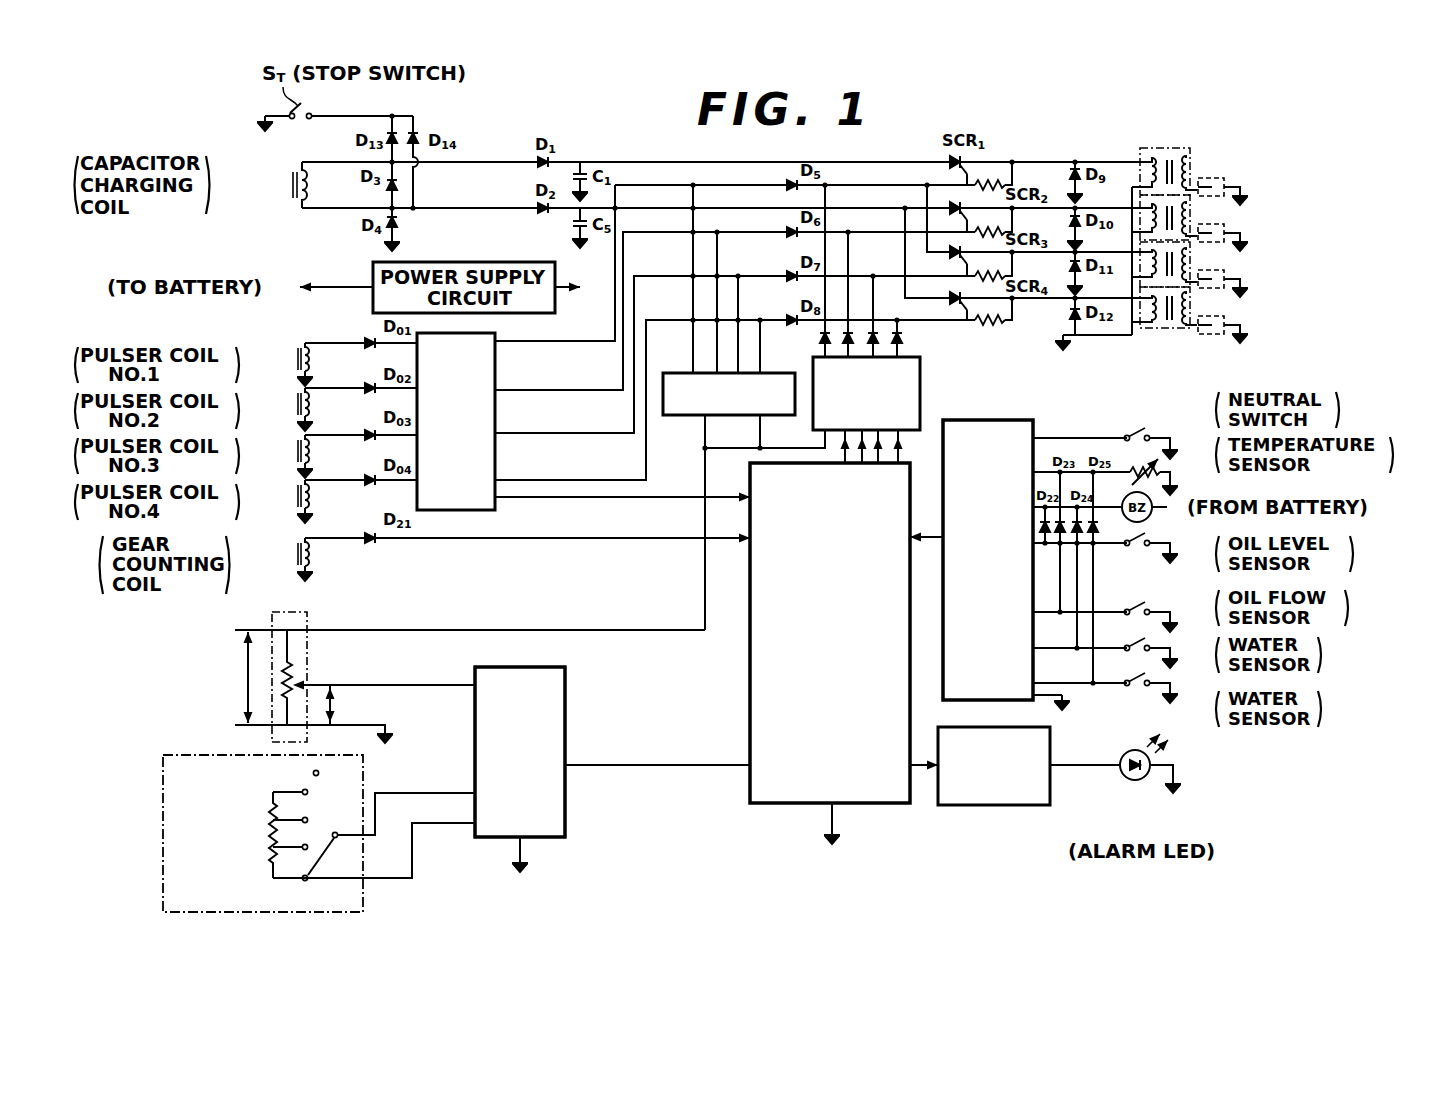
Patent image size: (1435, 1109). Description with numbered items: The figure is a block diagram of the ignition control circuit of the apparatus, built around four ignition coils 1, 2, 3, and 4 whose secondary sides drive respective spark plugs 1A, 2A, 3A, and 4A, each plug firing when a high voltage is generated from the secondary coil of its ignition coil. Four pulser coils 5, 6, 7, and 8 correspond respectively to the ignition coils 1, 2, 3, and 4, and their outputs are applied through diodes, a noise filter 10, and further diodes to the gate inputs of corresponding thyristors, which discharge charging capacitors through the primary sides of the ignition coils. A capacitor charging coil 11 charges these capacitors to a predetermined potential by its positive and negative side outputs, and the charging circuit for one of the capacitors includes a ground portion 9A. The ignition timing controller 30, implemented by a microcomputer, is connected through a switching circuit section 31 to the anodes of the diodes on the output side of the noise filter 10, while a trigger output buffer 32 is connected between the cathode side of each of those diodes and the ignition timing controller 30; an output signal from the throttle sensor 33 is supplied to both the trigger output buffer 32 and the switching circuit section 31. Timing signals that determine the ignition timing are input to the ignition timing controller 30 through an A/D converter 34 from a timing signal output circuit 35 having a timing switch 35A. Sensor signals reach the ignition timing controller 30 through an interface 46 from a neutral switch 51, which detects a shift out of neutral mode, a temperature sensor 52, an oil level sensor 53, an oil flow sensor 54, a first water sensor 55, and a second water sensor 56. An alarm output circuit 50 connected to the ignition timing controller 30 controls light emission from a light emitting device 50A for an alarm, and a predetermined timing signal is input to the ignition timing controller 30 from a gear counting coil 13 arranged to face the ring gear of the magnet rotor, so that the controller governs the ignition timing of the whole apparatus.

The ignition coil 1 is at (1146, 150).
The spark plug 1A is at (1216, 180).
The ignition coil 2 is at (1140, 226).
The spark plug 2A is at (1226, 228).
The ignition coil 3 is at (1140, 270).
The spark plug 3A is at (1226, 274).
The ignition coil 4 is at (1148, 330).
The spark plug 4A is at (1208, 335).
The pulser coil 5 is at (296, 358).
The pulser coil 6 is at (296, 404).
The pulser coil 7 is at (296, 447).
The pulser coil 8 is at (296, 496).
The ground portion 9A is at (386, 246).
The noise filter 10 is at (496, 371).
The capacitor charging coil 11 is at (291, 185).
The gear counting coil 13 is at (296, 555).
The ignition timing controller 30 is at (876, 804).
The switching circuit section 31 is at (681, 415).
The trigger output buffer 32 is at (921, 372).
The throttle sensor 33 is at (307, 612).
The A/D converter 34 is at (566, 702).
The timing signal output circuit 35 is at (288, 914).
The timing switch 35A is at (332, 850).
The interface 46 is at (1022, 420).
The alarm output circuit 50 is at (980, 806).
The light emitting device 50A is at (1135, 781).
The neutral switch 51 is at (1145, 430).
The temperature sensor 52 is at (1160, 460).
The oil level sensor 53 is at (1147, 538).
The oil flow sensor 54 is at (1147, 605).
The first water sensor 55 is at (1147, 643).
The second water sensor 56 is at (1150, 677).